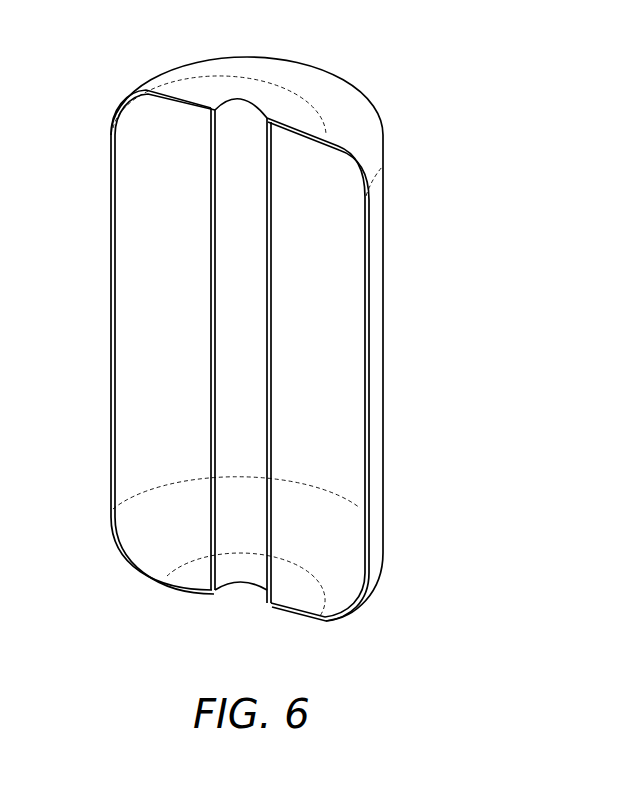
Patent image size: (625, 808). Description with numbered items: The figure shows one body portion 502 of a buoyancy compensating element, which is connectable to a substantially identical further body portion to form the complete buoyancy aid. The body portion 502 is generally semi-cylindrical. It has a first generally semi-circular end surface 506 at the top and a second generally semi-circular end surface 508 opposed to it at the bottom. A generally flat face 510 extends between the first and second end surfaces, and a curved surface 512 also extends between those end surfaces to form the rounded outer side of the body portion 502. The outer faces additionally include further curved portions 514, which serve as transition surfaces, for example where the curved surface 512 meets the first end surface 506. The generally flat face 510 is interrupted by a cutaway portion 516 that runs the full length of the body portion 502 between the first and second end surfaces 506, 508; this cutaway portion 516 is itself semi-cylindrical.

The first body portion 502 is at (289, 352).
The first end surface 506 is at (292, 89).
The second end surface 508 is at (295, 623).
The flat face 510 is at (337, 422).
The curved surface 512 is at (375, 480).
The further curved portions 514 is at (367, 126).
The cutaway portion 516 is at (235, 90).